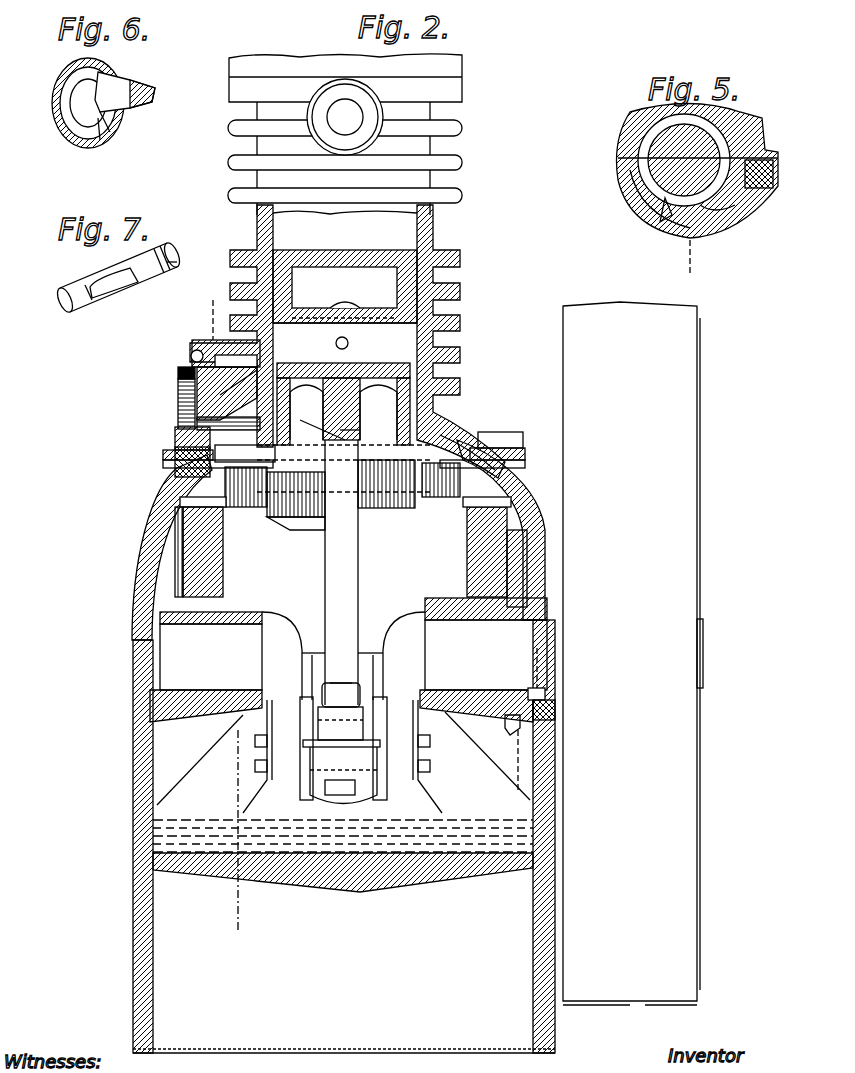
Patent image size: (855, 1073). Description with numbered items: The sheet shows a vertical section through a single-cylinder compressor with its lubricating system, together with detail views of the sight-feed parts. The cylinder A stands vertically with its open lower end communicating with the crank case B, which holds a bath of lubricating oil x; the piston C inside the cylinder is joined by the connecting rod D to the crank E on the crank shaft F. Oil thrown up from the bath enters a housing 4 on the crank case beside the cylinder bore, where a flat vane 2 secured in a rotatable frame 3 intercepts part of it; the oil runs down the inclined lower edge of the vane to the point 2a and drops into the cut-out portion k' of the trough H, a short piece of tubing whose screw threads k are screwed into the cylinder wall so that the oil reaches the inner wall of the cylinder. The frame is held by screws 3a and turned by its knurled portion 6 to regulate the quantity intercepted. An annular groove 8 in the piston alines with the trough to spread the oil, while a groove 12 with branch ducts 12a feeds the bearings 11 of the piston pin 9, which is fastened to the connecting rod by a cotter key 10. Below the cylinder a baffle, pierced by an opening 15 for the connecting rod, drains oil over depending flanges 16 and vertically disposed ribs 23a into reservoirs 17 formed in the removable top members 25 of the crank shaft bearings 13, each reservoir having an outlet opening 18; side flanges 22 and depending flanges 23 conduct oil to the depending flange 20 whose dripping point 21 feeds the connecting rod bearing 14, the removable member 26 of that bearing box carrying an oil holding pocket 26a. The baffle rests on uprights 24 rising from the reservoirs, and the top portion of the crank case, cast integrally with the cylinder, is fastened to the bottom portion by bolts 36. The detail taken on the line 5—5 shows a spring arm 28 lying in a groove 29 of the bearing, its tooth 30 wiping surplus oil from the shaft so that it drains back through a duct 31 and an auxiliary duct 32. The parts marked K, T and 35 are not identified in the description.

In FIG. 2, the cylinder A is at (232, 195).
In FIG. 2, the crank case B is at (172, 520).
In FIG. 2, the piston C is at (345, 274).
In FIG. 2, the connecting rod D is at (350, 572).
In FIG. 2, the crank E is at (341, 751).
In FIG. 2, the crank shaft F is at (211, 657).
In FIG. 5, the crank shaft F is at (632, 140).
In FIG. 2, the oil-catching device or trough H is at (245, 447).
In FIG. 7, the oil-catching device or trough H is at (118, 278).
In FIG. 2, the oil pan plate K is at (340, 882).
In FIG. 2, the fuel tank T is at (633, 653).
In FIG. 2, the screw threads k is at (328, 413).
In FIG. 7, the screw threads k is at (184, 258).
In FIG. 2, the cut-out portion k' is at (179, 433).
In FIG. 7, the cut-out portion k' is at (68, 280).
In FIG. 2, the bath of lubricating oil x is at (245, 805).
In FIG. 5, the bath of lubricating oil x is at (687, 266).
In FIG. 2, the vane 2 is at (230, 343).
In FIG. 6, the vane 2 is at (145, 80).
In FIG. 2, the point of vane 2a is at (222, 397).
In FIG. 6, the point of vane 2a is at (122, 114).
In FIG. 2, the frame 3 is at (176, 445).
In FIG. 6, the frame 3 is at (62, 142).
In FIG. 2, the screws 3a is at (191, 353).
In FIG. 2, the housing 4 is at (211, 300).
In FIG. 2, the valve spring 5 is at (178, 390).
In FIG. 6, the valve spring 5 is at (102, 142).
In FIG. 2, the knurled portion 6 is at (178, 369).
In FIG. 6, the knurled portion 6 is at (58, 78).
In FIG. 2, the annular groove 8 is at (467, 434).
In FIG. 2, the piston pin 9 is at (345, 333).
In FIG. 2, the cotter key 10 is at (347, 346).
In FIG. 2, the bearings 11 is at (386, 383).
In FIG. 2, the groove 12 is at (436, 312).
In FIG. 2, the branch ducts 12a is at (344, 292).
In FIG. 2, the crank shaft bearings 13 is at (262, 608).
In FIG. 2, the connecting rod bearing 14 is at (430, 745).
In FIG. 2, the opening 15 is at (388, 510).
In FIG. 2, the depending flanges 16 is at (226, 510).
In FIG. 2, the oil cups or reservoirs 17 is at (262, 548).
In FIG. 2, the outlet opening 18 is at (226, 618).
In FIG. 2, the depending flange 20 is at (268, 510).
In FIG. 2, the dripping point 21 is at (335, 525).
In FIG. 2, the side flanges 22 is at (432, 505).
In FIG. 2, the depending flanges 23 is at (200, 462).
In FIG. 2, the vertically disposed ribs 23a is at (200, 468).
In FIG. 2, the uprights 24 is at (175, 566).
In FIG. 2, the removable top members 25 is at (160, 618).
In FIG. 5, the removable top members 25 is at (745, 130).
In FIG. 2, the removable member 26 is at (380, 770).
In FIG. 2, the oil holding pocket 26a is at (300, 740).
In FIG. 2, the spring arm 28 is at (555, 708).
In FIG. 5, the spring arm 28 is at (735, 215).
In FIG. 5, the groove 29 is at (630, 205).
In FIG. 2, the tooth 30 is at (547, 694).
In FIG. 5, the tooth 30 is at (658, 222).
In FIG. 2, the duct 31 is at (510, 730).
In FIG. 5, the duct 32 is at (762, 192).
In FIG. 2, the case arch 35 is at (542, 512).
In FIG. 2, the bolts 36 is at (515, 440).